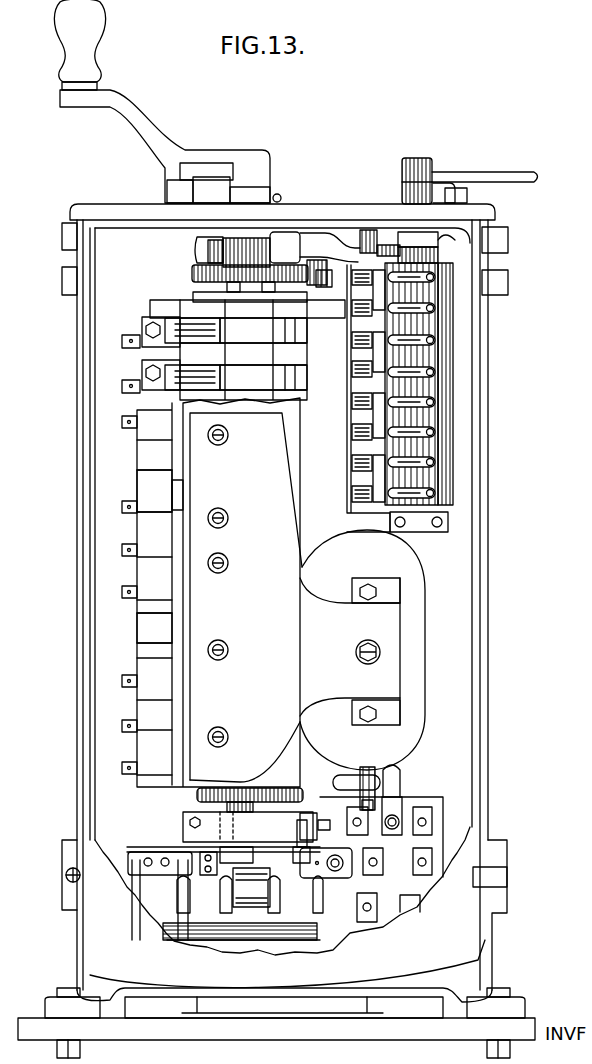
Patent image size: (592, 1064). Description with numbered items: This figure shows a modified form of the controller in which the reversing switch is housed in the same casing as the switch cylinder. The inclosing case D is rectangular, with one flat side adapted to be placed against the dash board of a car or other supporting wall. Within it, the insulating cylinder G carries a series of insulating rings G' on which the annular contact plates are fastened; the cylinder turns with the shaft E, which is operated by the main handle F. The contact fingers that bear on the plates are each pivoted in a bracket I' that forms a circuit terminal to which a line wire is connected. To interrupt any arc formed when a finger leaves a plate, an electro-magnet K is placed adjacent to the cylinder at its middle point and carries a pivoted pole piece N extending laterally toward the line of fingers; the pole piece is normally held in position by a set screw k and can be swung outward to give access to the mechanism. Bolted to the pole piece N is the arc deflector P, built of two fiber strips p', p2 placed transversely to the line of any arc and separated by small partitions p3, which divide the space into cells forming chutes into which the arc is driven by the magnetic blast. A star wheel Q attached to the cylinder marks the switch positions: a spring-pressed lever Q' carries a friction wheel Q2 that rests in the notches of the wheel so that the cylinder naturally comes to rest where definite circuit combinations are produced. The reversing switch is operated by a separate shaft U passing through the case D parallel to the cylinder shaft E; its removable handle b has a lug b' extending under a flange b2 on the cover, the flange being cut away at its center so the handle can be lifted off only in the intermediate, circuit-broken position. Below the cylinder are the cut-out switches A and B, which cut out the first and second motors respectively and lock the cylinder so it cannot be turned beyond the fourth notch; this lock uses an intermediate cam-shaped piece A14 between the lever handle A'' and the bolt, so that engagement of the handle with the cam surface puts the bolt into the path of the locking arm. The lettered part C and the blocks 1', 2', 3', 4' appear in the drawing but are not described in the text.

The inclosing case D is at (90, 442).
The main handle F is at (79, 45).
The cylinder shaft E is at (258, 130).
The reversing switch shaft U is at (416, 171).
The handle b is at (485, 165).
The flange b2 is at (445, 185).
The lug b' is at (466, 195).
The star wheel Q is at (257, 267).
The friction wheel Q2 is at (328, 272).
The spring pressed lever Q' is at (326, 287).
The coil stack / resistance C is at (405, 381).
The contact block 4 4' is at (379, 290).
The contact block 3 3' is at (379, 352).
The contact block 2 2' is at (379, 415).
The contact block 1 1' is at (379, 478).
The insulating cylinder G is at (247, 350).
The insulating rings G' is at (236, 354).
The bracket I' is at (150, 347).
The arc deflector P is at (290, 412).
The fiber strip p' is at (143, 491).
The fiber strip p2 is at (173, 503).
The partitions p3 is at (157, 610).
The pivoted pole piece N is at (246, 597).
The electro-magnet K is at (413, 637).
The set screw k is at (356, 652).
The intermediate piece A14 is at (236, 848).
The cut-out switch A is at (225, 893).
The cut-out switch B is at (259, 886).
The lever handle A'' is at (243, 940).